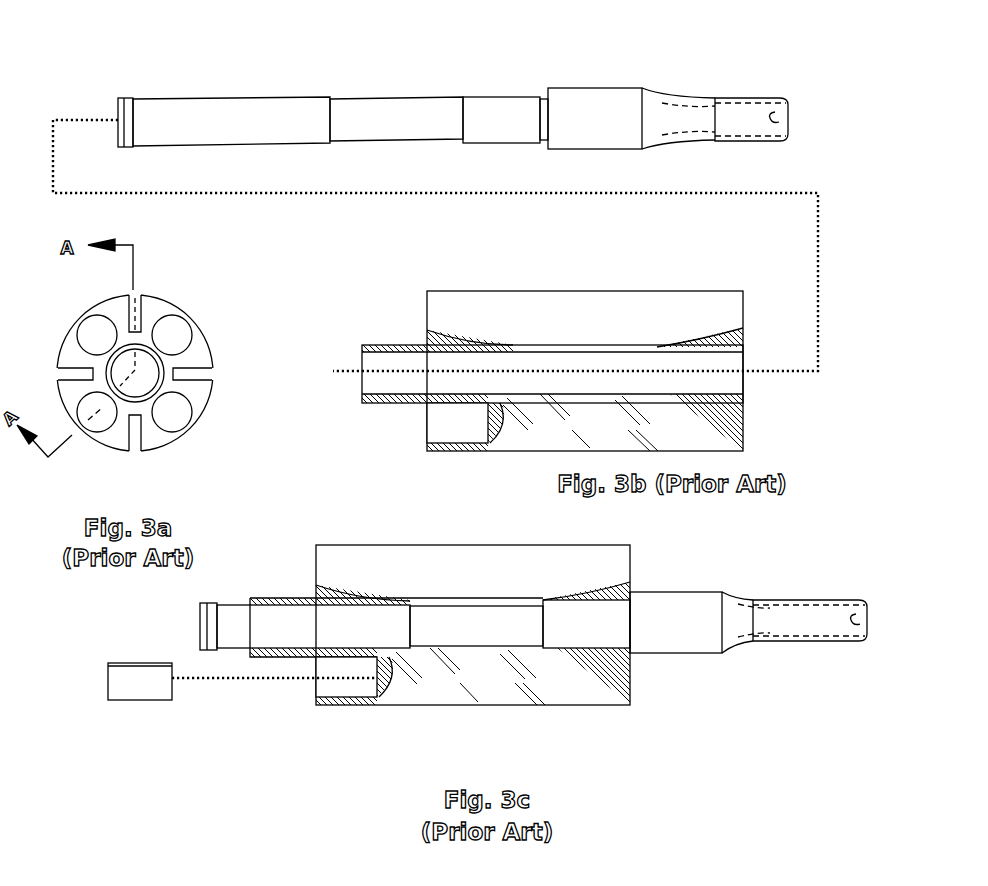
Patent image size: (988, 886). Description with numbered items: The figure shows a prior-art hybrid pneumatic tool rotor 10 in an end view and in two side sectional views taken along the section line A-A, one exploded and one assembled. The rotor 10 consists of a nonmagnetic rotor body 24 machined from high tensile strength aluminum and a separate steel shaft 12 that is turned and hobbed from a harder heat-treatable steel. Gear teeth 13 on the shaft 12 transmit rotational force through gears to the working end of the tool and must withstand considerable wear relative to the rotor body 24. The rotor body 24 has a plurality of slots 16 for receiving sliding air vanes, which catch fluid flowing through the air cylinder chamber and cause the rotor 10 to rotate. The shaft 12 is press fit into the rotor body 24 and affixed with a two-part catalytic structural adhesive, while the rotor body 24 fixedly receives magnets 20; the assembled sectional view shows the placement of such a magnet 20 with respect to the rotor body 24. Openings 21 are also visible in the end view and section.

In FIG. 3a, the rotor 10 is at (216, 309).
In FIG. 3a, the shaft 12 is at (263, 130).
In FIG. 3c, the shaft 12 is at (669, 612).
In FIG. 3a, the gear teeth 13 is at (731, 108).
In FIG. 3c, the gear teeth 13 is at (797, 642).
In FIG. 3a, the slots 16 is at (187, 378).
In FIG. 3b, the slots 16 is at (462, 328).
In FIG. 3c, the slots 16 is at (390, 577).
In FIG. 3c, the magnets 20 is at (137, 682).
In FIG. 3a, the hole / recess 21 is at (175, 408).
In FIG. 3b, the hole / recess 21 is at (440, 423).
In FIG. 3b, the nonmagnetic rotor body 24 is at (555, 435).
In FIG. 3c, the nonmagnetic rotor body 24 is at (442, 687).